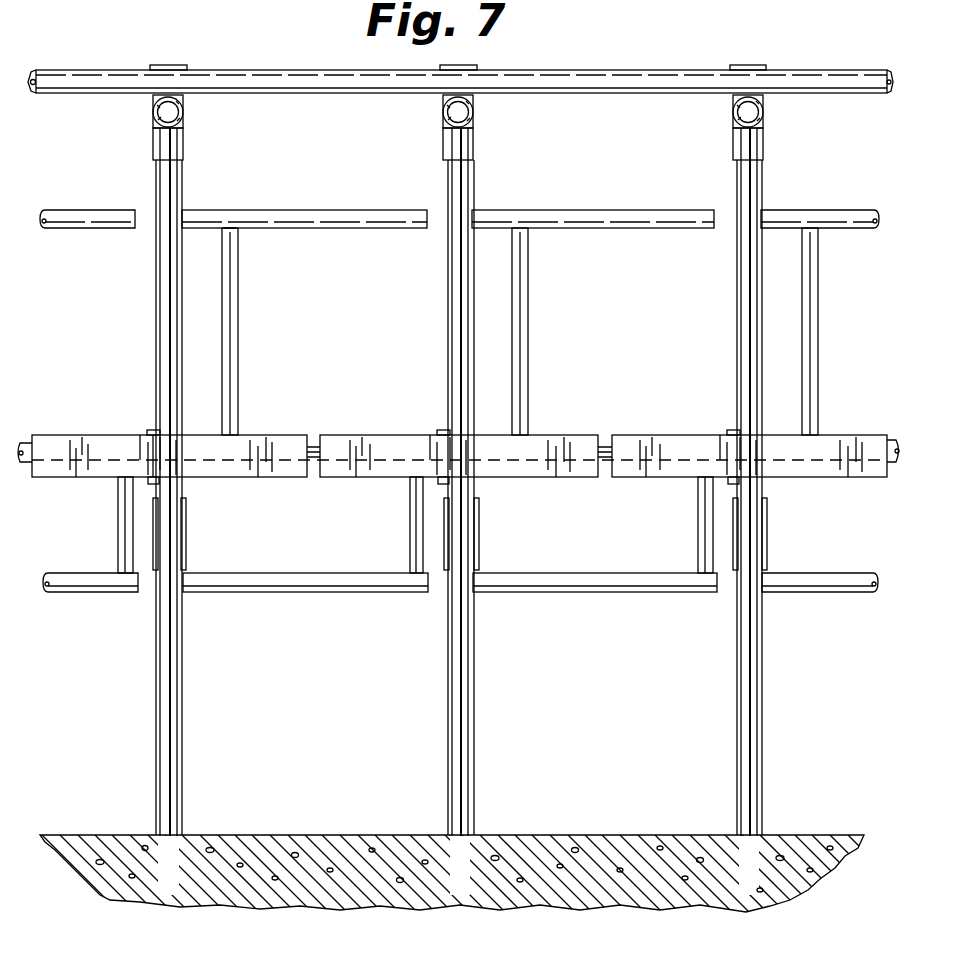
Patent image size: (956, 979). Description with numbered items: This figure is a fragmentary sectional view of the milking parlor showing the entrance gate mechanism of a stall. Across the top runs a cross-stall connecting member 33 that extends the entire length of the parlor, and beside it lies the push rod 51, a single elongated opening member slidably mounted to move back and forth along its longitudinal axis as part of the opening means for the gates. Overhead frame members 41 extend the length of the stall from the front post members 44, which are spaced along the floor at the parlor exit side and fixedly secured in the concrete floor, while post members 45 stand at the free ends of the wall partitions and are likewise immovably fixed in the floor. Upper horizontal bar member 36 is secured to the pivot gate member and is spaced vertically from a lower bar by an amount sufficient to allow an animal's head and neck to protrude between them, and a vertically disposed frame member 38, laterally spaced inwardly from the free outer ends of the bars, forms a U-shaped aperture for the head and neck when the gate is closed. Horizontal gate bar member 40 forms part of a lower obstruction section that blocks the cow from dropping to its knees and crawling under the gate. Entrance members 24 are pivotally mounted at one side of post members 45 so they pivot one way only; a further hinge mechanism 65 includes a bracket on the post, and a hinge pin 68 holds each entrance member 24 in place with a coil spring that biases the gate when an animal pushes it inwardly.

The entrance member 24 is at (282, 433).
The cross-stall connecting member 33 is at (620, 80).
The upper horizontal bar member 36 is at (347, 215).
The vertically disposed frame member 38 is at (234, 372).
The horizontal gate bar member 40 is at (330, 592).
The overhead frame member 41 is at (183, 114).
The front post member 44 is at (184, 740).
The free end post member 45 is at (165, 327).
The push rod 51 is at (32, 70).
The hinge mechanism 65 is at (138, 428).
The hinge pin 68 is at (154, 430).